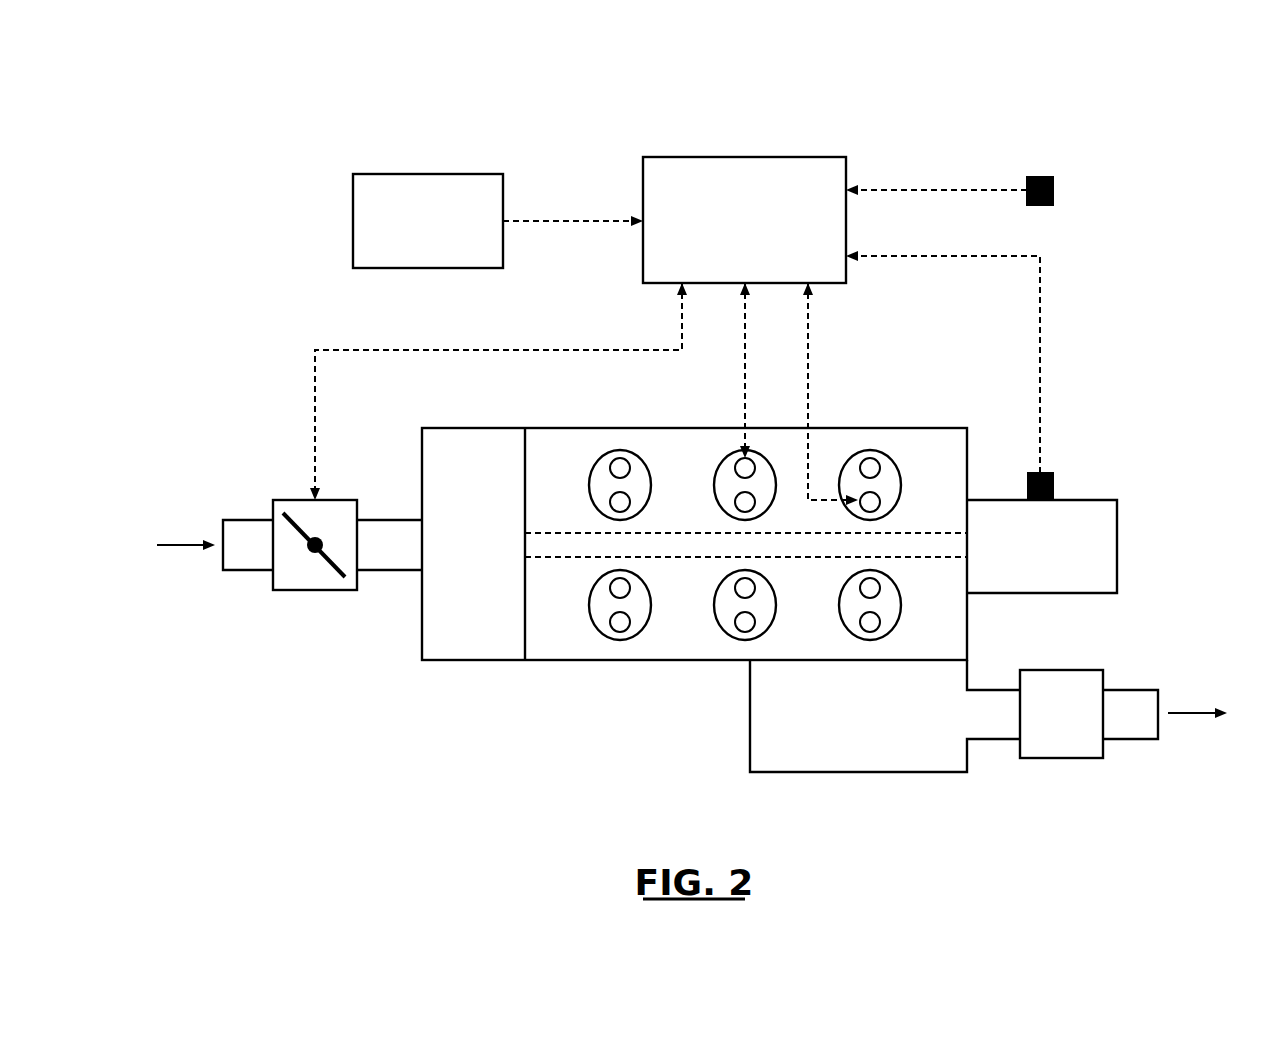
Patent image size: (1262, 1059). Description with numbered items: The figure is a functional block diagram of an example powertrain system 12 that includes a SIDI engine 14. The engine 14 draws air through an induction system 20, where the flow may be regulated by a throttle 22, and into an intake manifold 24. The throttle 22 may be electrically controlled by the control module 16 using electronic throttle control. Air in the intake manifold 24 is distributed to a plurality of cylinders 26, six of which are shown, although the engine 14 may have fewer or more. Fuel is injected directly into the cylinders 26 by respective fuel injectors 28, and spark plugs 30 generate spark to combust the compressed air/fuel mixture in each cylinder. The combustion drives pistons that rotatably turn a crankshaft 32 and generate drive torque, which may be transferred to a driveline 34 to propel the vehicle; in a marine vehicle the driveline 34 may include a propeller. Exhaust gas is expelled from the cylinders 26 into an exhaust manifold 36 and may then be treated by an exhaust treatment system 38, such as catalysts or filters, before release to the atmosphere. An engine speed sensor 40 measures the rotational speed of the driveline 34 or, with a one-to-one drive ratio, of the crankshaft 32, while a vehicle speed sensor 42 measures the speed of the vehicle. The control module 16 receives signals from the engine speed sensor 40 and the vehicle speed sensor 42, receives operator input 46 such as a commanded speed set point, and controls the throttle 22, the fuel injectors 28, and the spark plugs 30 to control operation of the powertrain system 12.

The powertrain system 12 is at (308, 77).
The SIDI engine 14 is at (694, 497).
The control module 16 is at (747, 157).
The induction system 20 is at (247, 520).
The throttle 22 is at (315, 590).
The intake manifold 24 is at (473, 660).
The cylinders 26 is at (650, 610).
The fuel injectors 28 is at (861, 585).
The spark plugs 30 is at (752, 622).
The crankshaft 32 is at (746, 545).
The driveline 34 is at (1117, 547).
The exhaust manifold 36 is at (860, 772).
The exhaust treatment system 38 is at (1063, 758).
The engine speed sensor 40 is at (1053, 485).
The vehicle speed sensor 42 is at (1053, 188).
The operator input 46 is at (430, 174).